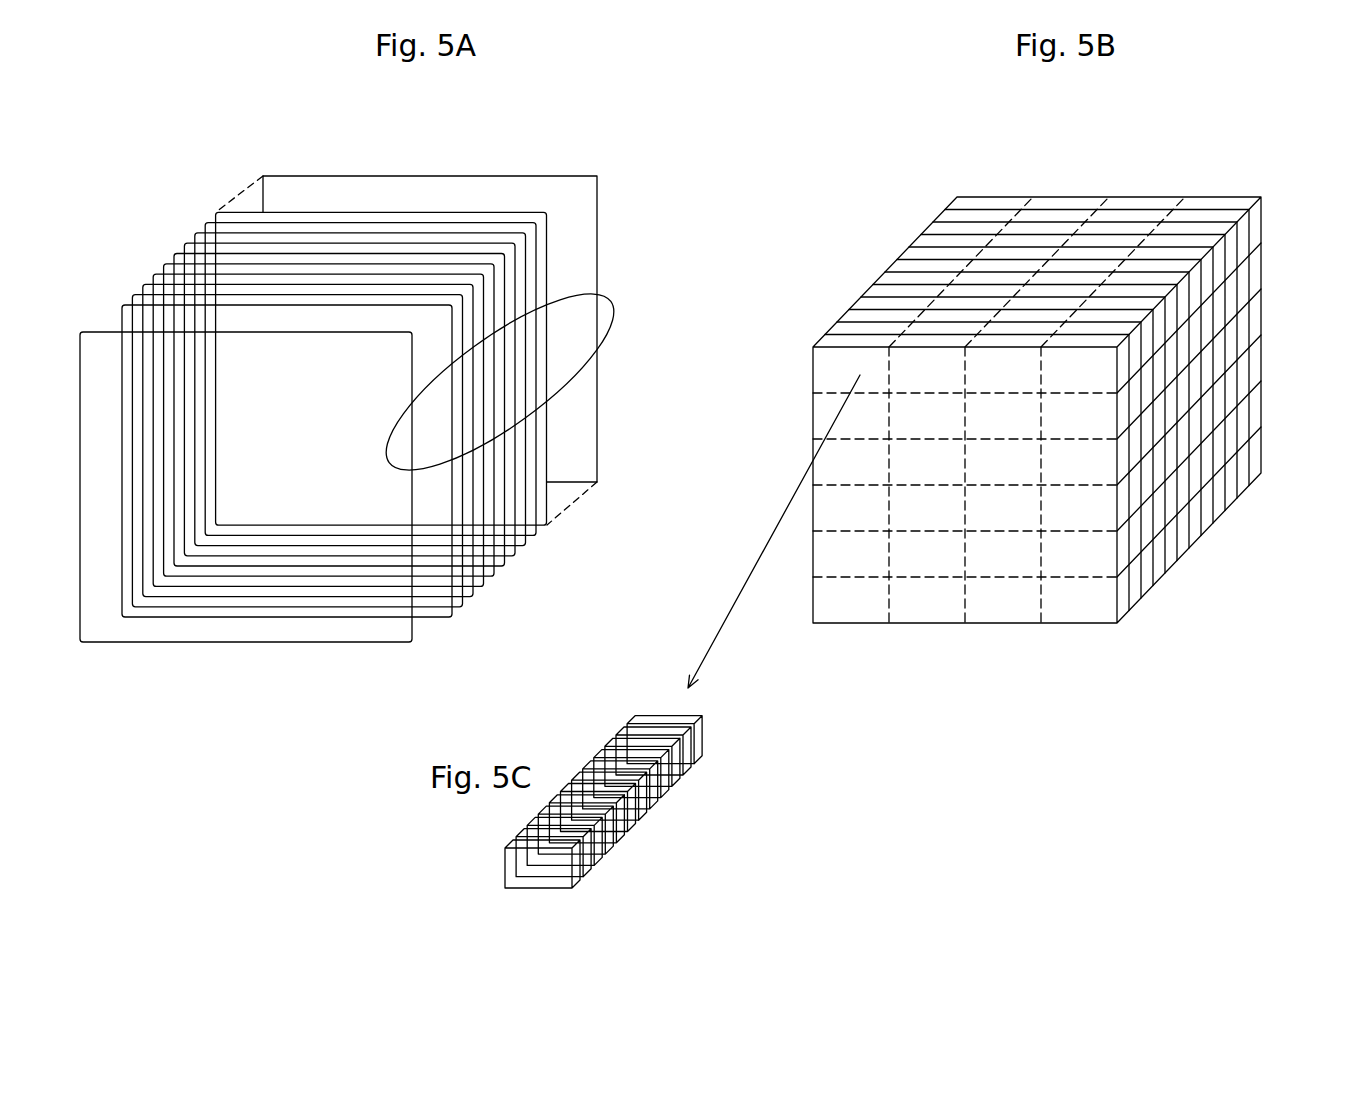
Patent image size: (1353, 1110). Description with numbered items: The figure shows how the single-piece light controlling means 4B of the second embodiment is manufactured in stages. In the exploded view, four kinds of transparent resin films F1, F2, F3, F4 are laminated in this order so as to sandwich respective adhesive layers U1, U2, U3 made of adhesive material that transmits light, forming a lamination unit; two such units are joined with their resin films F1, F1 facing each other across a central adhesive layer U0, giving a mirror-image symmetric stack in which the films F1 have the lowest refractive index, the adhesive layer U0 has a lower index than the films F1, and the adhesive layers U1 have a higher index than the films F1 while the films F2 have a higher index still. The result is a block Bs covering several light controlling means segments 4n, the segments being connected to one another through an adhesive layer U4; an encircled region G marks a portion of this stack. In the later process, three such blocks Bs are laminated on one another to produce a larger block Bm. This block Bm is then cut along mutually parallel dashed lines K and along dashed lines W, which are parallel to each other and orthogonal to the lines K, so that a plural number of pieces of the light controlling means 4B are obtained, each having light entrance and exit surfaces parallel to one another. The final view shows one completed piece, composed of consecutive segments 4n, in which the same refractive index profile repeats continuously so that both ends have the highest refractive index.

In FIG. 5A, the block Bs is at (232, 138).
In FIG. 5B, the block Bs is at (952, 192).
In FIG. 5A, the adhesive layer U4 is at (328, 177).
In FIG. 5A, the transparent resin film F4 is at (435, 618).
In FIG. 5A, the adhesive layer U3 is at (460, 607).
In FIG. 5A, the transparent resin film F3 is at (468, 597).
In FIG. 5A, the adhesive layer U2 is at (482, 578).
In FIG. 5A, the transparent resin film F2 is at (498, 570).
In FIG. 5A, the adhesive layer U1 is at (513, 567).
In FIG. 5A, the transparent resin film F1 is at (520, 555).
In FIG. 5A, the adhesive layer U0 is at (453, 232).
In FIG. 5A, the group of plates G is at (610, 297).
In FIG. 5B, the block Bm is at (1173, 162).
In FIG. 5B, the dashed lines K is at (1040, 193).
In FIG. 5B, the dashed lines W is at (1268, 240).
In FIG. 5C, the light controlling means segment 4n is at (752, 784).
In FIG. 5C, the light controlling means 4B is at (642, 812).